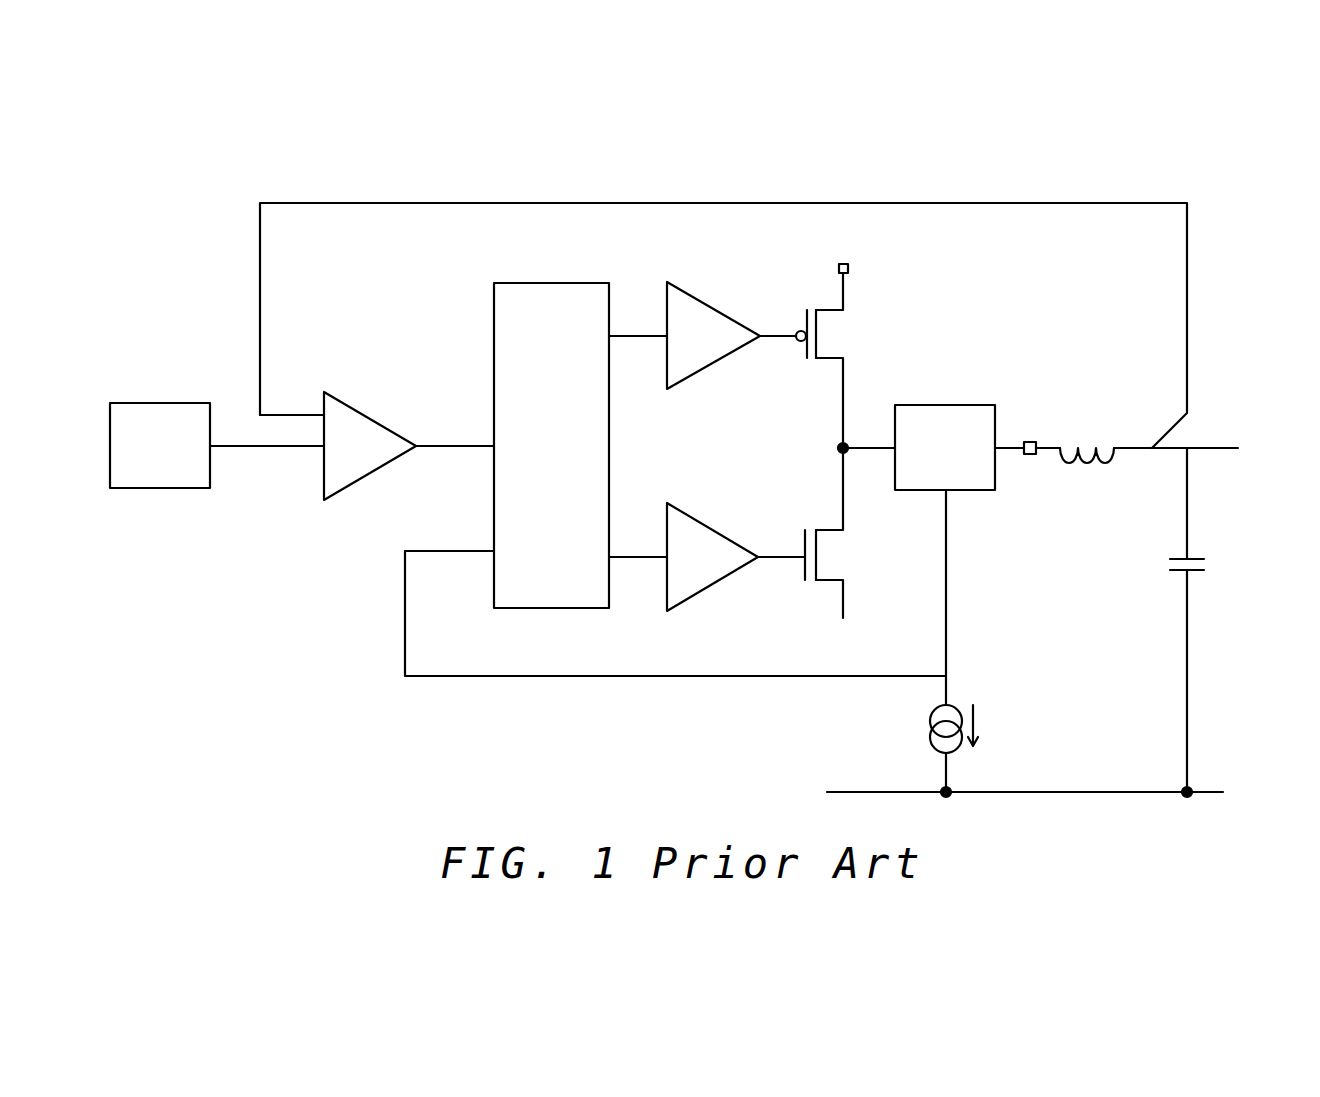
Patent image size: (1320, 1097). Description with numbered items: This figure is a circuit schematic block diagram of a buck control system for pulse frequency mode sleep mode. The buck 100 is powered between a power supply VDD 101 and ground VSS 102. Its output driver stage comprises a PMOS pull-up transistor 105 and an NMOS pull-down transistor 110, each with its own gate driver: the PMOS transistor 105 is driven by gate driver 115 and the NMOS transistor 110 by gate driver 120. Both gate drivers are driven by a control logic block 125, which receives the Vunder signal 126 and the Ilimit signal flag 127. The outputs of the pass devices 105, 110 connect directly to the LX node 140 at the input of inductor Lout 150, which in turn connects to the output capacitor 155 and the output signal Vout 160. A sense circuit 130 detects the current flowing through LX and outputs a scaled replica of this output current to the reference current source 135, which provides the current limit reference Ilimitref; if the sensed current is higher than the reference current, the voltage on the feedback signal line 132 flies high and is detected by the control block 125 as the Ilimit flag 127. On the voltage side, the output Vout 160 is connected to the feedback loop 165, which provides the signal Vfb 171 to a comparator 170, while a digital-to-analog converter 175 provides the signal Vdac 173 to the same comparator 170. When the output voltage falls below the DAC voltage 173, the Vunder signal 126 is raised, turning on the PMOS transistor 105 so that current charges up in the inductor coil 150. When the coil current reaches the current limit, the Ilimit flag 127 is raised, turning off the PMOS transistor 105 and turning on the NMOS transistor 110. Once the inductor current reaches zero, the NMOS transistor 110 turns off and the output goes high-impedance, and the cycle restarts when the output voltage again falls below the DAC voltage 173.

The buck 100 is at (263, 160).
The power supply VDD 101 is at (852, 240).
The ground VSS 102 is at (1213, 789).
The PMOS pull-up transistor 105 is at (860, 320).
The NMOS pull-down transistor 110 is at (858, 540).
The gate driver 115 is at (702, 368).
The gate driver 120 is at (702, 589).
The control logic block 125 is at (545, 283).
The Vunder signal 126 is at (451, 420).
The Ilimit signal flag 127 is at (442, 554).
The sense circuit 130 is at (946, 405).
The feedback signal line 132 is at (452, 678).
The current source 135 is at (1024, 706).
The LX node 140 is at (1029, 416).
The inductor Lout 150 is at (1090, 418).
The output capacitor 155 is at (1208, 568).
The output signal Vout 160 is at (1230, 447).
The feedback loop 165 is at (743, 203).
The comparator 170 is at (368, 474).
The signal Vfb 171 is at (293, 388).
The signal Vdac 173 is at (297, 491).
The digital-to-analog converter (DAC) 175 is at (160, 402).